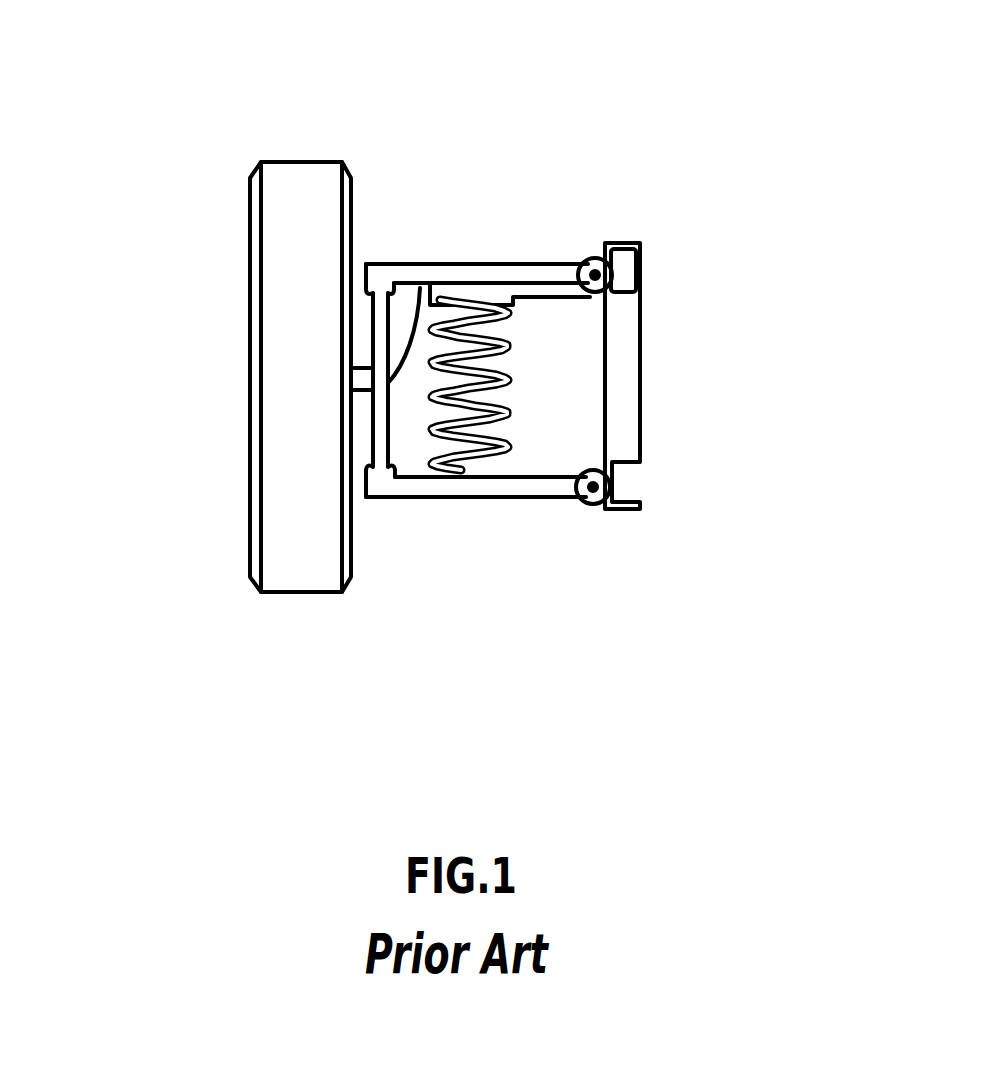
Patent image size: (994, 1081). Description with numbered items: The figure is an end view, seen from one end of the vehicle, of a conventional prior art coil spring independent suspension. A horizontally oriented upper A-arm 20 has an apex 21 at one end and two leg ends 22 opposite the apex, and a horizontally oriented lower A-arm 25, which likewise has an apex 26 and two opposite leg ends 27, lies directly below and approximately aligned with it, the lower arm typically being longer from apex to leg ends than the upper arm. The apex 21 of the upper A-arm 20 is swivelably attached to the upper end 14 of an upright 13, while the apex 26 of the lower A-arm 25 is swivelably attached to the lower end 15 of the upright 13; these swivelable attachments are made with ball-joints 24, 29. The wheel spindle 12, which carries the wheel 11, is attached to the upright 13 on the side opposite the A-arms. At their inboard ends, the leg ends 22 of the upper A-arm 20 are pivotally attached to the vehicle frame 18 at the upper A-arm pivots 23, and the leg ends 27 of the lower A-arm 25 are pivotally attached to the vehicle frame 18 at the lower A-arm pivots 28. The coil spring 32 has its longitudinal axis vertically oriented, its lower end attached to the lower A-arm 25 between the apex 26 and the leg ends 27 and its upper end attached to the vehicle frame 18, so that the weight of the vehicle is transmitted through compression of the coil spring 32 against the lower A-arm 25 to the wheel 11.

The wheel 11 is at (249, 518).
The wheel spindle 12 is at (363, 497).
The upright 13 is at (490, 265).
The upper end of upright 14 is at (372, 345).
The lower end of upright 15 is at (387, 433).
The vehicle frame 18 is at (630, 243).
The upper A-arm 20 is at (533, 265).
The apex of upper A-arm 21 is at (386, 280).
The leg ends of upper A-arm 22 is at (550, 265).
The upper A-arm pivots 23 is at (600, 275).
The ball-joint 24 is at (440, 263).
The lower A-arm 25 is at (478, 497).
The apex of lower A-arm 26 is at (368, 497).
The leg ends of lower A-arm 27 is at (625, 509).
The lower A-arm pivots 28 is at (558, 497).
The ball-joint 29 is at (373, 497).
The coil spring 32 is at (512, 350).